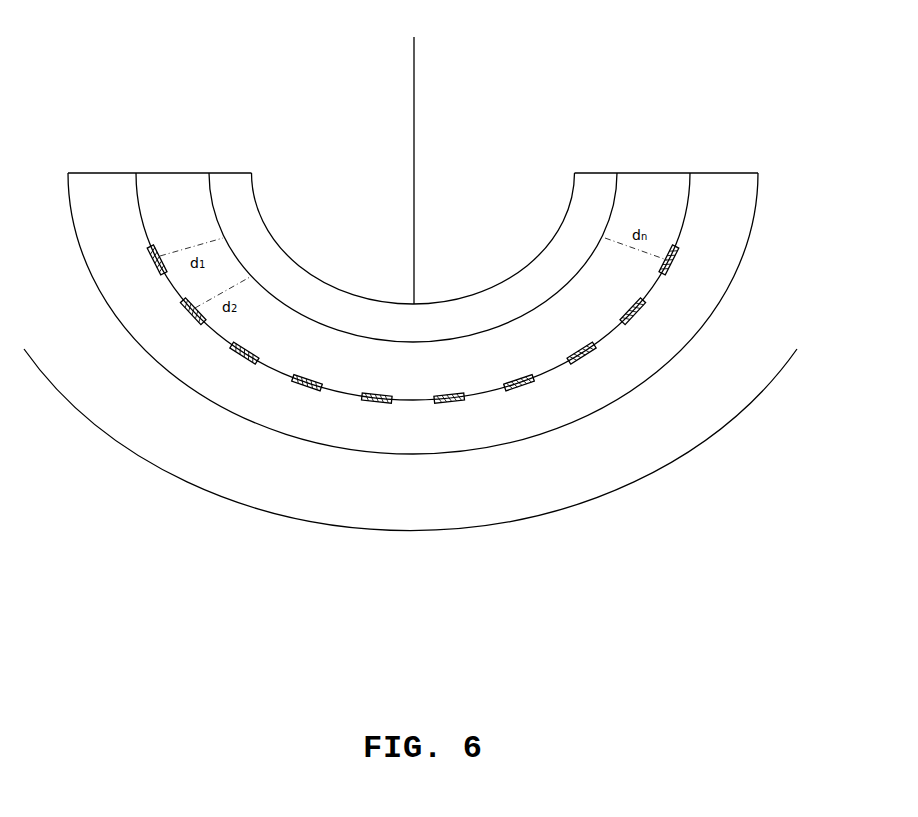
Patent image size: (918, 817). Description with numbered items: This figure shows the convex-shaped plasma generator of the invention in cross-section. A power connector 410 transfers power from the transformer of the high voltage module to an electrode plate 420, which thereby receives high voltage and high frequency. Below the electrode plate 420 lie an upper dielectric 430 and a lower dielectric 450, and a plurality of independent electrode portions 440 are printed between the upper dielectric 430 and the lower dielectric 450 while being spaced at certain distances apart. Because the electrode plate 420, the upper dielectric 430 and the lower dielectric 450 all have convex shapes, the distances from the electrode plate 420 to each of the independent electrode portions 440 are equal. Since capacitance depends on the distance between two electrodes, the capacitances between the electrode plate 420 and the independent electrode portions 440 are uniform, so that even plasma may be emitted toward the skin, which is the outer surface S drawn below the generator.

The power connector 410 is at (414, 102).
The electrode plate 420 is at (588, 188).
The upper dielectric 430 is at (660, 188).
The independent electrode portions 440 is at (672, 268).
The lower dielectric 450 is at (732, 203).
The surface S is at (522, 520).